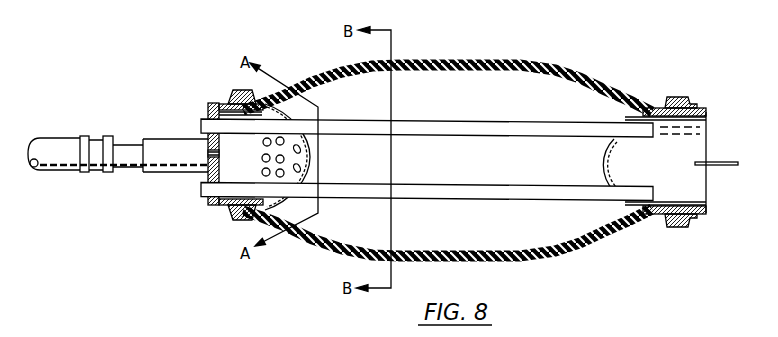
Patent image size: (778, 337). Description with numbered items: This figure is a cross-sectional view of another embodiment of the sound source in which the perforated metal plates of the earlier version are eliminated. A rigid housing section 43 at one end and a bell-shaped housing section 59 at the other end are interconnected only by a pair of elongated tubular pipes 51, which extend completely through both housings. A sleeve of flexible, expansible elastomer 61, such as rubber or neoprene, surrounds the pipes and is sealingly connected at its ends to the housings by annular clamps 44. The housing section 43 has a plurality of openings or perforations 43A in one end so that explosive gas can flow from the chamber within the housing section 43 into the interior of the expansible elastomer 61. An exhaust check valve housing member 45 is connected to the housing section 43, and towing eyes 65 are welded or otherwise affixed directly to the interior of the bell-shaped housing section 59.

The housing section 43 is at (211, 207).
The openings or perforations 43A is at (264, 143).
The annular clamp 44 is at (243, 92).
The housing member 45 is at (167, 171).
The elongated tubular pipes 51 is at (201, 123).
The housing section 59 is at (704, 109).
The elastomer sleeve 61 is at (614, 238).
The towing eyes 65 is at (722, 167).